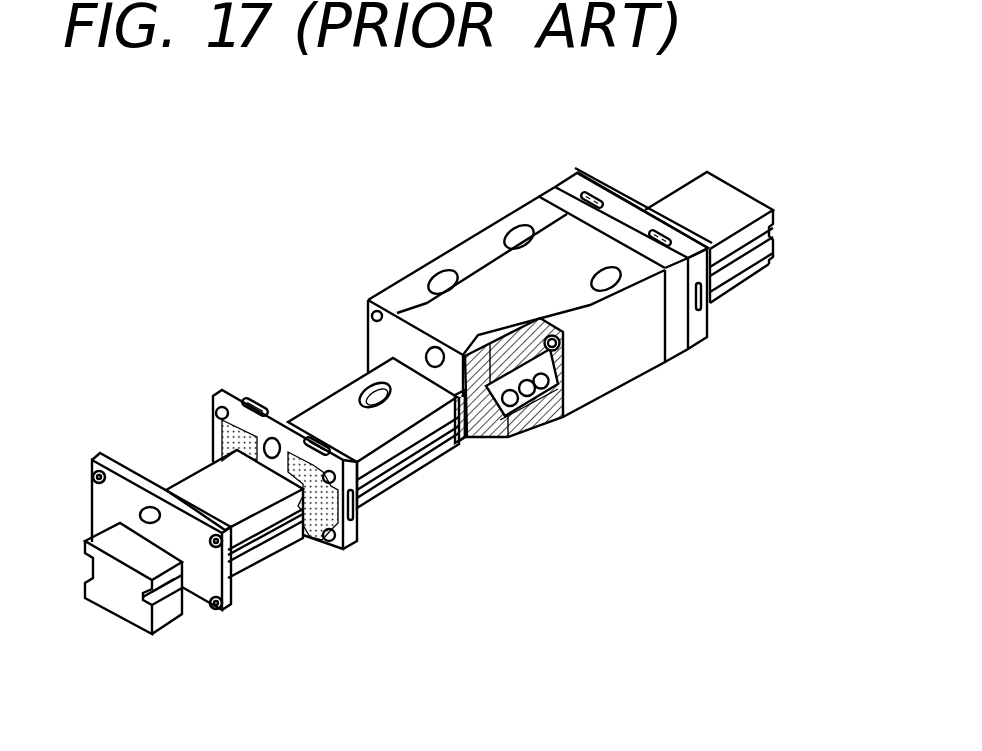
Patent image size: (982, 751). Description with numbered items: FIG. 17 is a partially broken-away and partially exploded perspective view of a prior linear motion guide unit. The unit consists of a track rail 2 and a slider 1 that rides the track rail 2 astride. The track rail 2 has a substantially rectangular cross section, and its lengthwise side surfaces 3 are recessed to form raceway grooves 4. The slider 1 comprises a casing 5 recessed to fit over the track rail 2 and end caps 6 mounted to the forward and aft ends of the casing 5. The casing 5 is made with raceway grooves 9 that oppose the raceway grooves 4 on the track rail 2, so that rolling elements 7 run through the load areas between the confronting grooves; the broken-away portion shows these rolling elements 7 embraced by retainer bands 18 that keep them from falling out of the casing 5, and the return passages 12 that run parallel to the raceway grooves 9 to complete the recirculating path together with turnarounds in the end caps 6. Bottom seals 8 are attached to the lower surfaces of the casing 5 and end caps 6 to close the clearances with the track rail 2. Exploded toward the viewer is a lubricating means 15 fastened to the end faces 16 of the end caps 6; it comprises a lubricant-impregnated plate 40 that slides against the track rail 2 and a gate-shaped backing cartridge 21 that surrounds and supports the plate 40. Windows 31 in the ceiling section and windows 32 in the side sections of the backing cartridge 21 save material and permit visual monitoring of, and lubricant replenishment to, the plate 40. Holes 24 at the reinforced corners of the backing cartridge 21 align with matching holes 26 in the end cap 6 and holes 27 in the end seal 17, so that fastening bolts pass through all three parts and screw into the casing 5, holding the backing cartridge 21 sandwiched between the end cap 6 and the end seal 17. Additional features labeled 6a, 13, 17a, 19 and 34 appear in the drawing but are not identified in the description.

The slider 1 is at (603, 401).
The track rail 2 is at (330, 420).
The lengthwise side surfaces 3 is at (90, 566).
The raceway grooves 4 is at (160, 600).
The casing 5 is at (492, 245).
The end caps 6 is at (564, 188).
The end plate hole 6a is at (432, 349).
The rolling elements 7 is at (526, 398).
The bottom seals 8 is at (542, 418).
The raceway grooves 9 is at (560, 420).
The return passages 12 is at (553, 351).
The mounting hole 13 is at (380, 394).
The lubricating means 15 is at (699, 346).
The end faces 16 is at (450, 382).
The end seals 17 is at (712, 320).
The seal hole 17a is at (152, 507).
The retainer bands 18 is at (484, 404).
The mounting hole 19 is at (517, 226).
The backing cartridge 21 is at (220, 392).
The holes 24 is at (220, 410).
The holes 26 is at (372, 313).
The holes 27 is at (92, 468).
The windows 31 is at (312, 443).
The windows 32 is at (360, 530).
The grease hole 34 is at (272, 438).
The lubricant-impregnated plate 40 is at (221, 437).